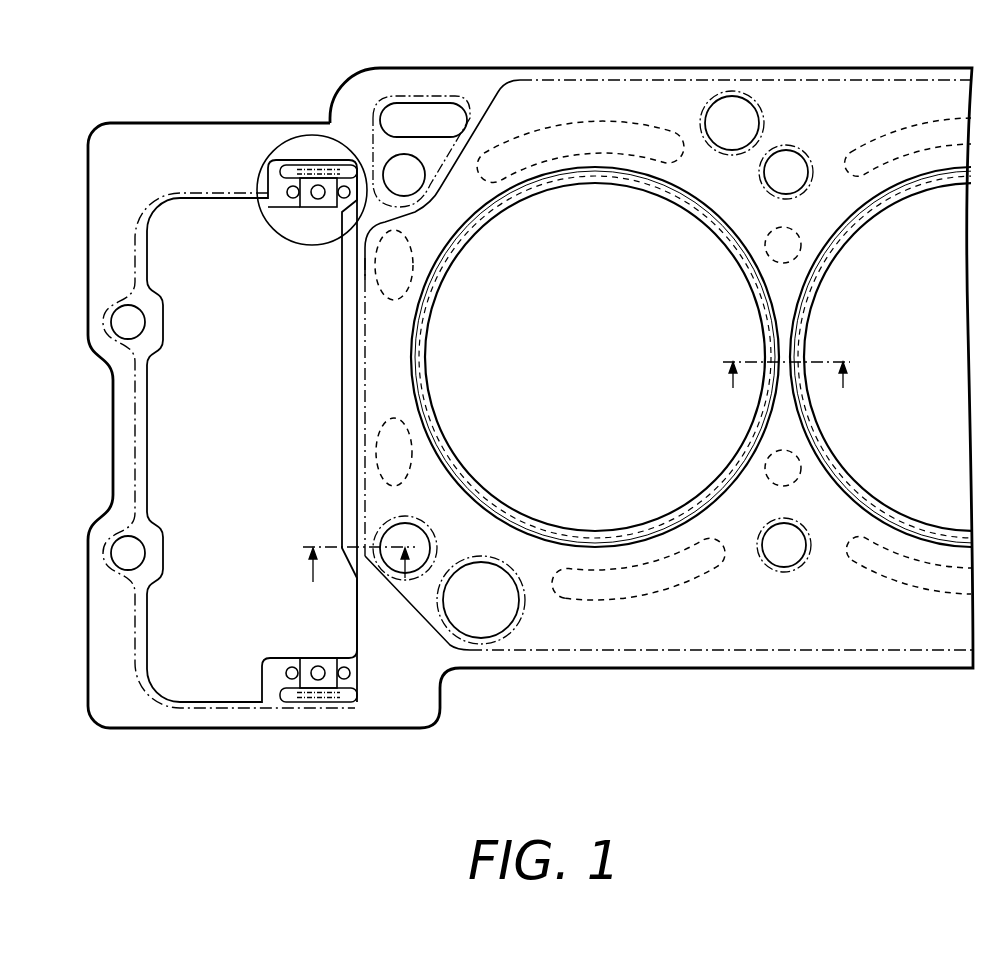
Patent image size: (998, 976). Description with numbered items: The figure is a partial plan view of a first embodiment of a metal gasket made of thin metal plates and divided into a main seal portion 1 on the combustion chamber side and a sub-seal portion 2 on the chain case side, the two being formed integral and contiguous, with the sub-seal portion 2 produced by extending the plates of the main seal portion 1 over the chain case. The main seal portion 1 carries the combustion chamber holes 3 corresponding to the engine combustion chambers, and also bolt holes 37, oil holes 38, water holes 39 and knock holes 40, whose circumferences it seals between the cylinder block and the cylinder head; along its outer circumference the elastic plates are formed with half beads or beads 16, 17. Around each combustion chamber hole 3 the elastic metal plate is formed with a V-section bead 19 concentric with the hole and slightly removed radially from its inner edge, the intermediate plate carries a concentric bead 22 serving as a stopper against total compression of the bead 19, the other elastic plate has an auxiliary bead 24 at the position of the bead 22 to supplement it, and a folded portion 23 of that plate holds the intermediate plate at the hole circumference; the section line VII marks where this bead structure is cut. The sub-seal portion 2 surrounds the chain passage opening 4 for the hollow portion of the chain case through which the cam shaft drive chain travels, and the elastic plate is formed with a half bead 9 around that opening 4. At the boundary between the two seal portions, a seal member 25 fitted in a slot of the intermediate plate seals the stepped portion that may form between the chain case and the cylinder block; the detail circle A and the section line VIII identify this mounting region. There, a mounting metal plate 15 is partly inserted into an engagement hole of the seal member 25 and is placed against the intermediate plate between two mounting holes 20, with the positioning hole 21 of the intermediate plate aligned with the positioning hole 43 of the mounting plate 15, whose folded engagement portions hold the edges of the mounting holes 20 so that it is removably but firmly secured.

The main seal portion 1 is at (676, 110).
The sub-seal portion 2 is at (170, 143).
The combustion chamber hole 3 is at (584, 367).
The chain passage opening 4 is at (229, 441).
The half bead 9 is at (136, 430).
The mounting metal plate 15 is at (307, 198).
The half bead 16 is at (668, 407).
The bead 17 is at (600, 652).
The bead 19 is at (472, 228).
The mounting hole 20 is at (344, 182).
The positioning hole 21 is at (306, 479).
The positioning hole 43 is at (318, 198).
The bead 22 is at (706, 357).
The auxiliary bead 24 is at (568, 175).
The folded portion 23 is at (422, 335).
The seal member 25 is at (290, 167).
The bolt hole 37 is at (788, 168).
The oil hole 38 is at (408, 113).
The water hole 39 is at (587, 130).
The knock hole 40 is at (380, 525).
The detail circle A is at (307, 132).
The section line VII is at (783, 390).
The section line VIII is at (354, 586).